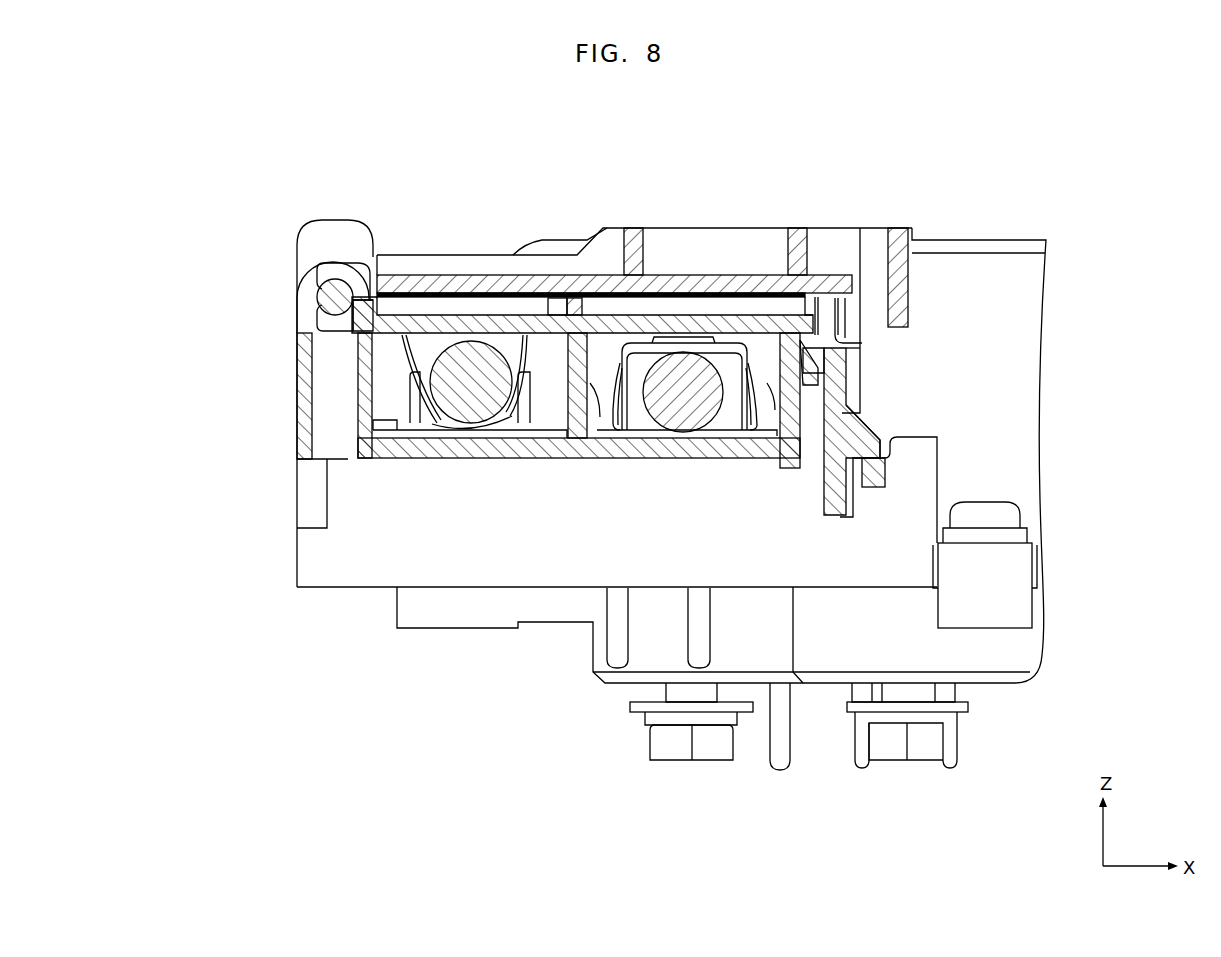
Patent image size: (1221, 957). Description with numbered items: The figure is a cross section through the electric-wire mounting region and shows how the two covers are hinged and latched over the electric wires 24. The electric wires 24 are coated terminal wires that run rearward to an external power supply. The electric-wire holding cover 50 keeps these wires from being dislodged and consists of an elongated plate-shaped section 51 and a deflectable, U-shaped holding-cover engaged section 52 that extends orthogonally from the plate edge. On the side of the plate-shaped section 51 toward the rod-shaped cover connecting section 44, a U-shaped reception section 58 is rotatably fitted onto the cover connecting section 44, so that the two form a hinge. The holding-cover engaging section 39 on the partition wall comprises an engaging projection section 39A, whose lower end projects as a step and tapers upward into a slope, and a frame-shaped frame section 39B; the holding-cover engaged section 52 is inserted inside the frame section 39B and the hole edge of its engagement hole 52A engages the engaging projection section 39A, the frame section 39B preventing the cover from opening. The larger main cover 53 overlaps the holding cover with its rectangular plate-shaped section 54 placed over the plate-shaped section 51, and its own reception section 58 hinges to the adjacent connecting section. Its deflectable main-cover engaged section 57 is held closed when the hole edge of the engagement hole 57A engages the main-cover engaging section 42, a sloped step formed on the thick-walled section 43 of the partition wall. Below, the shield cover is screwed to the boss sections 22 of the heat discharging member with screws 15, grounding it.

The screw 15 is at (1007, 518).
The boss section 22 is at (1000, 614).
The electric wire 24 is at (683, 400).
The holding-cover engaging section 39 is at (892, 128).
The engaging projection section 39A is at (819, 367).
The frame section 39B is at (821, 367).
The main-cover engaging section 42 is at (866, 440).
The thick-walled section 43 is at (873, 473).
The cover connecting section 44 is at (331, 298).
The electric-wire holding cover 50 is at (611, 290).
The plate-shaped section 51 is at (548, 312).
The holding-cover engaged section 52 is at (820, 377).
The engagement hole 52A is at (820, 365).
The main cover 53 is at (718, 256).
The plate-shaped section 54 is at (677, 268).
The main-cover engaged section 57 is at (868, 493).
The engagement hole 57A is at (884, 463).
The reception section 58 is at (340, 270).